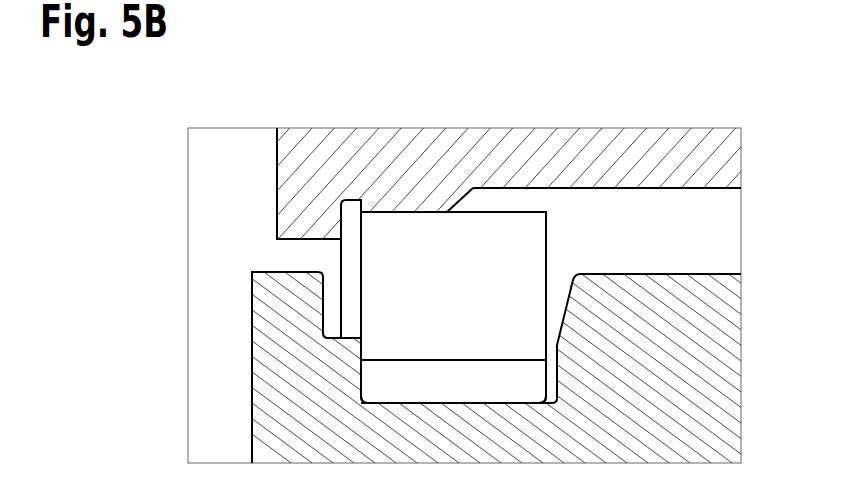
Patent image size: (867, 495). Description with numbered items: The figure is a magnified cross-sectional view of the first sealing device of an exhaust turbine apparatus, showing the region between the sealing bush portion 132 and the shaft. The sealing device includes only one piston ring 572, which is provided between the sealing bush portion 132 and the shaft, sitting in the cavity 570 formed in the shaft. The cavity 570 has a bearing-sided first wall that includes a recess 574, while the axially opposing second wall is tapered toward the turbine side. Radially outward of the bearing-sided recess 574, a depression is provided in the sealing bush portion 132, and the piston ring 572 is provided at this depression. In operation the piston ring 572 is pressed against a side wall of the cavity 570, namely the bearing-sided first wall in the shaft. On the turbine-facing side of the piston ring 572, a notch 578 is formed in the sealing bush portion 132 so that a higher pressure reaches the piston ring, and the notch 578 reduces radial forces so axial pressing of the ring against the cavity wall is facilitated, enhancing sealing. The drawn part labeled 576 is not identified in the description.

The sealing bush portion 132 is at (581, 169).
The cavity 570 is at (352, 377).
The piston ring 572 is at (554, 252).
The recess 574 is at (331, 311).
The sealing sleeve 576 is at (352, 213).
The notch 578 is at (490, 204).